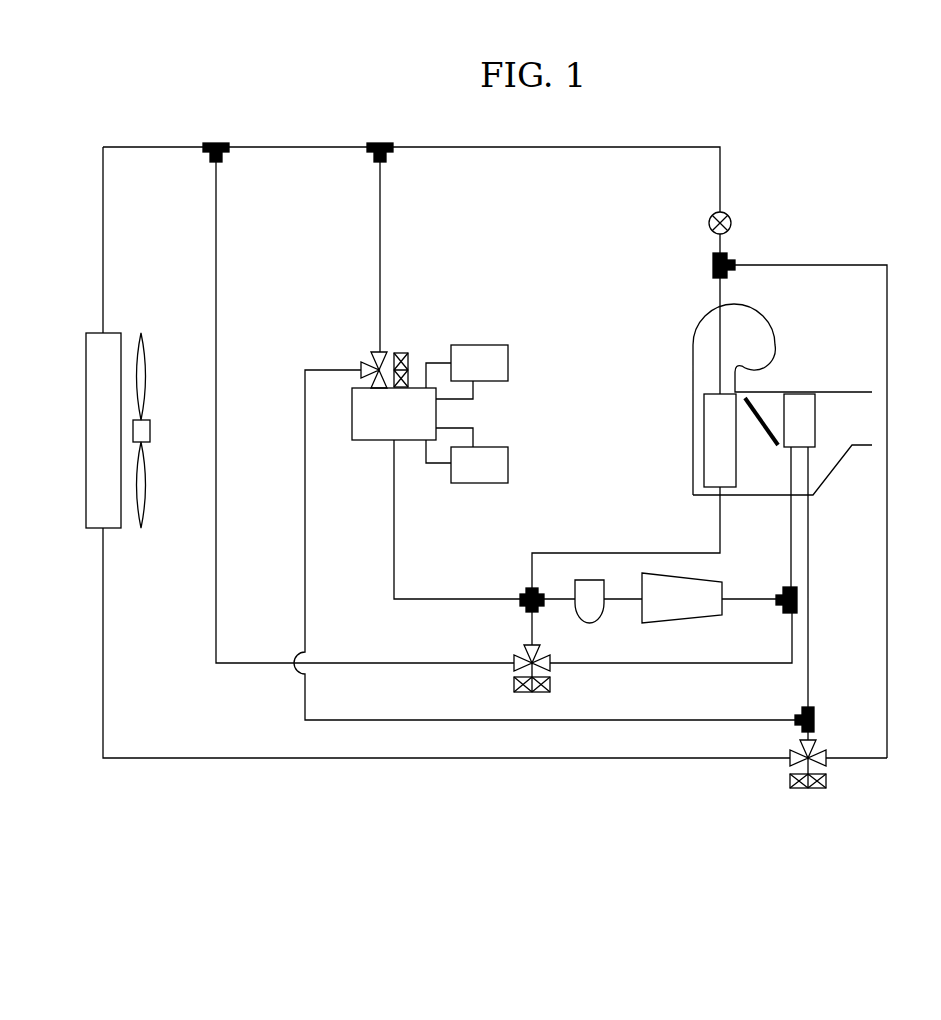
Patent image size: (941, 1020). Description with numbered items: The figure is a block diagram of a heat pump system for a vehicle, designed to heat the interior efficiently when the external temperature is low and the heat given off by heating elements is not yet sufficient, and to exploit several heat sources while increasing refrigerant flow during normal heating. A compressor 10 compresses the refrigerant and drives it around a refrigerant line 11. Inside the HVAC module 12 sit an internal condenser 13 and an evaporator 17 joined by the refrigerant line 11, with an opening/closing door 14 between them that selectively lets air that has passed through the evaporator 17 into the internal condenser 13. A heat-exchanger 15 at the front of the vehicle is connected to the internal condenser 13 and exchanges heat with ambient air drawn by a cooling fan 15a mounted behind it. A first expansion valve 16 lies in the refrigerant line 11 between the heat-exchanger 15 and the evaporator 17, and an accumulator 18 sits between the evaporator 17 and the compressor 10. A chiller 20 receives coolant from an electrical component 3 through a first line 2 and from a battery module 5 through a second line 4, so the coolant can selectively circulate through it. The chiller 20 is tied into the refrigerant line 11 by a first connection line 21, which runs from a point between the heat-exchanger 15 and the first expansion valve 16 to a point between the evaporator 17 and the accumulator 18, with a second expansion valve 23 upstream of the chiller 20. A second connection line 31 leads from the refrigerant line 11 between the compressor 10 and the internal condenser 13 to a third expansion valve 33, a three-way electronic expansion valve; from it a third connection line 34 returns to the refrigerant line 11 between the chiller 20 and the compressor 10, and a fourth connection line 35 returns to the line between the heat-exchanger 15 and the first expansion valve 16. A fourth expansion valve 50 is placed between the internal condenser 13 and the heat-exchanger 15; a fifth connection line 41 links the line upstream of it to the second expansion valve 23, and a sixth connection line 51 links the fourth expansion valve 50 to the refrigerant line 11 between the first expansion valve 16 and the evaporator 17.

The first line 2 is at (438, 363).
The electrical component 3 is at (508, 363).
The second line 4 is at (475, 436).
The battery module 5 is at (508, 465).
The compressor 10 is at (703, 620).
The refrigerant line 11 is at (296, 146).
The HVAC module 12 is at (818, 380).
The internal condenser 13 is at (815, 418).
The opening/closing door 14 is at (762, 418).
The heat-exchanger 15 is at (86, 430).
The cooling fan 15a is at (151, 432).
The first expansion valve 16 is at (733, 223).
The evaporator 17 is at (704, 440).
The accumulator 18 is at (604, 616).
The chiller 20 is at (370, 441).
The first connection line 21 is at (378, 242).
The second expansion valve 23 is at (400, 352).
The second connection line 31 is at (668, 665).
The third expansion valve 33 is at (551, 686).
The third connection line 34 is at (530, 627).
The fourth connection line 35 is at (215, 574).
The fifth connection line 41 is at (305, 404).
The fourth expansion valve 50 is at (826, 782).
The sixth connection line 51 is at (887, 548).